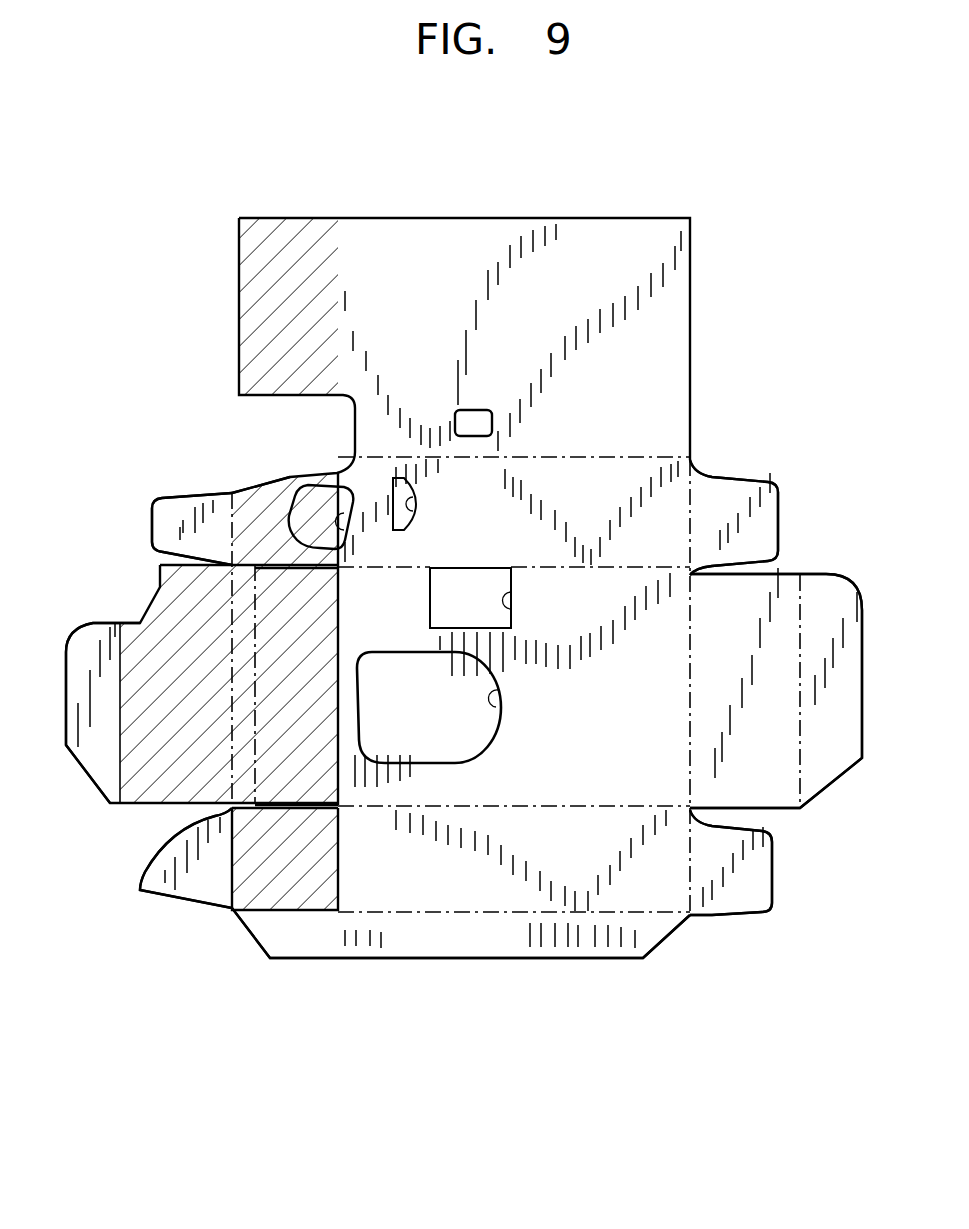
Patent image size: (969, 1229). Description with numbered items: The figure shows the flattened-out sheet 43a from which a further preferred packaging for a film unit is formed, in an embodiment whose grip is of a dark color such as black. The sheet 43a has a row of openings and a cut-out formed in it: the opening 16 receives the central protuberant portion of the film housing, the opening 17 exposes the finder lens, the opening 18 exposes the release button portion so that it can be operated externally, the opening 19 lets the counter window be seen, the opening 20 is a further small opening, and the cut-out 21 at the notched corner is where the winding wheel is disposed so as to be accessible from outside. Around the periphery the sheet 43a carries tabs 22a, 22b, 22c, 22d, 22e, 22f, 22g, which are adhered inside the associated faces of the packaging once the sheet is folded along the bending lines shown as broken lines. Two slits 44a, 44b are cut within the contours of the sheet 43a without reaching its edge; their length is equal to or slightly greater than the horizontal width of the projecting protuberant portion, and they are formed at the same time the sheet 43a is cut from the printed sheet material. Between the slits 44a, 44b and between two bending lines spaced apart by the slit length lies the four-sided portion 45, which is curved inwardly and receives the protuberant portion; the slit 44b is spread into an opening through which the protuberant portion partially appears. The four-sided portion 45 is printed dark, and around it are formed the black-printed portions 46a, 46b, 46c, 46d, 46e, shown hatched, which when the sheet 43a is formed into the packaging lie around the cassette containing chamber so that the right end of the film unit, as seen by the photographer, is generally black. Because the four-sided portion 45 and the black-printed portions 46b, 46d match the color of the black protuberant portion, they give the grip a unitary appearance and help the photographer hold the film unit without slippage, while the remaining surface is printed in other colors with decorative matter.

The opening 16 is at (498, 706).
The opening 17 is at (512, 604).
The opening 18 is at (348, 528).
The opening 19 is at (412, 512).
The opening 20 is at (490, 419).
The cut-out 21 is at (283, 478).
The tab 22a is at (166, 527).
The tab 22b is at (105, 770).
The tab 22c is at (198, 894).
The tab 22d is at (530, 948).
The tab 22e is at (748, 897).
The tab 22f is at (840, 762).
The tab 22g is at (762, 518).
The sheet 43a is at (441, 192).
The slit 44a is at (297, 808).
The slit 44b is at (300, 568).
The four-sided portion 45 is at (354, 709).
The black-printed portion 46a is at (262, 291).
The black-printed portion 46b is at (262, 497).
The black-printed portion 46c is at (174, 602).
The black-printed portion 46d is at (237, 657).
The black-printed portion 46e is at (263, 896).